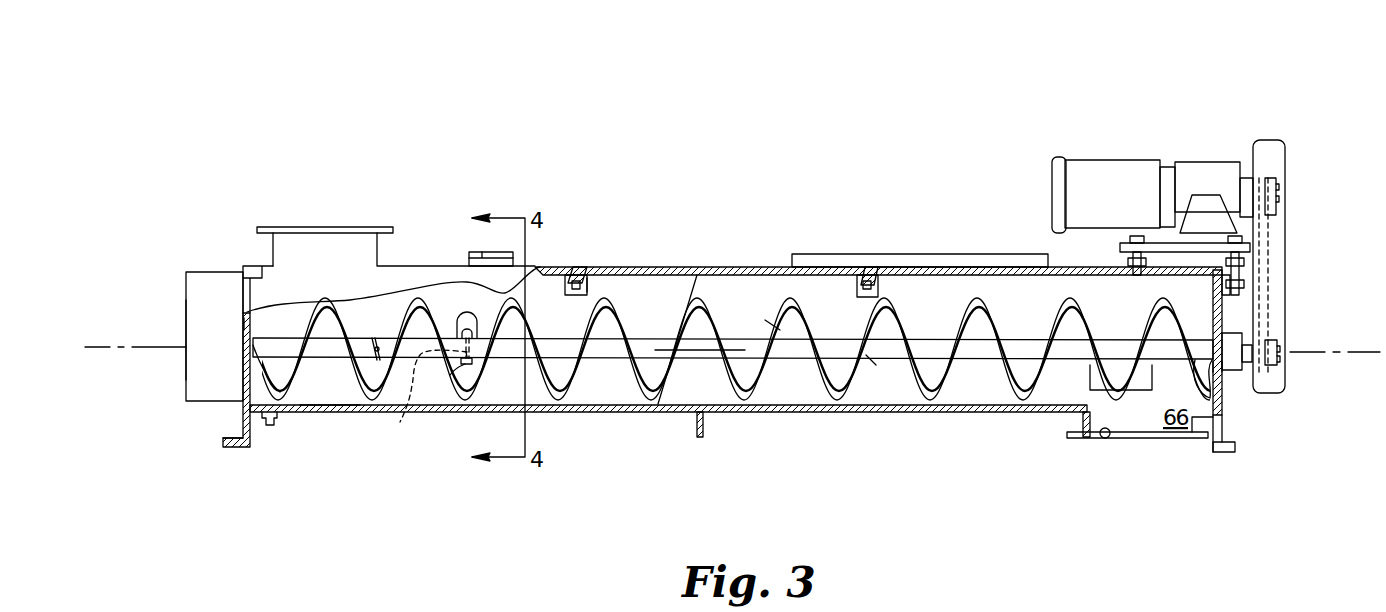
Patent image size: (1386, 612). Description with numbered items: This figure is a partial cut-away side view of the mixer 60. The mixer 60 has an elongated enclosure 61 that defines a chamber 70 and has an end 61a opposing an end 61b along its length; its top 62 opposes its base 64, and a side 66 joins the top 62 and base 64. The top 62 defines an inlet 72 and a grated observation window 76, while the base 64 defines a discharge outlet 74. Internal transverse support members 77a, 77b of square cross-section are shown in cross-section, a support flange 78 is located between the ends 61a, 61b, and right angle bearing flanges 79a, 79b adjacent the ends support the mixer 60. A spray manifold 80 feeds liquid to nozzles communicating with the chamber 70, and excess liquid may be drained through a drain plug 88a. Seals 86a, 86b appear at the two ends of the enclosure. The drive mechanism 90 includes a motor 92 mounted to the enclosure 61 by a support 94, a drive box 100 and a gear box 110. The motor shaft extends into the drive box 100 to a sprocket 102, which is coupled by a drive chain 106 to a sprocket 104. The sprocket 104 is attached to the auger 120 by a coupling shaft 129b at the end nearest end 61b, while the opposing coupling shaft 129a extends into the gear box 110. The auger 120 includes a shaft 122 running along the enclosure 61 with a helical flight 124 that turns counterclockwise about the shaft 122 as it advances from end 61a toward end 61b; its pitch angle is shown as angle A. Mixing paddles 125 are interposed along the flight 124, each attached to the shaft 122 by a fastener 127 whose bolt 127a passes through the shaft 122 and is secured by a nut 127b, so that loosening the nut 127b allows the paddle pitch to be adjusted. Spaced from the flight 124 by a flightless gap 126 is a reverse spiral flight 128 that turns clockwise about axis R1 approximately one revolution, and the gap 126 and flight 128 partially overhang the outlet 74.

The mixer 60 is at (720, 166).
The enclosure 61 is at (697, 275).
The end of enclosure 61a is at (186, 372).
The end of enclosure 61b is at (1222, 410).
The top 62 is at (566, 278).
The base 64 is at (607, 413).
The side 66 is at (258, 275).
The chamber 70 is at (333, 406).
The inlet 72 is at (325, 226).
The discharge outlet 74 is at (1105, 440).
The grated observation window 76 is at (895, 254).
The internal transverse support member 77a is at (590, 285).
The internal transverse support member 77b is at (862, 293).
The support flange 78 is at (705, 432).
The right angle bearing flange 79a is at (228, 450).
The right angle bearing flange 79b is at (1228, 453).
The spray manifold 80 is at (466, 251).
The first seal 86a is at (245, 322).
The second seal 86b is at (1225, 370).
The drain plug 88a is at (268, 427).
The drive mechanism 90 is at (1181, 227).
The motor 92 is at (1152, 195).
The support 94 is at (1225, 290).
The drive box 100 is at (1285, 162).
The sprocket 102 is at (1277, 210).
The sprocket 104 is at (1277, 360).
The drive chain 106 is at (1270, 268).
The gear box 110 is at (214, 336).
The auger 120 is at (905, 406).
The shaft 122 is at (870, 360).
The helical flight 124 is at (773, 322).
The mixing paddle 125 is at (465, 313).
The gap 126 is at (1075, 412).
The fastener 127 is at (375, 360).
The bolt 127a is at (405, 420).
The nut 127b is at (457, 375).
The reverse spiral flight 128 is at (1187, 300).
The coupling shaft 129a is at (293, 380).
The coupling shaft 129b is at (1205, 400).
The axis R1 is at (110, 337).
The angle A is at (722, 345).